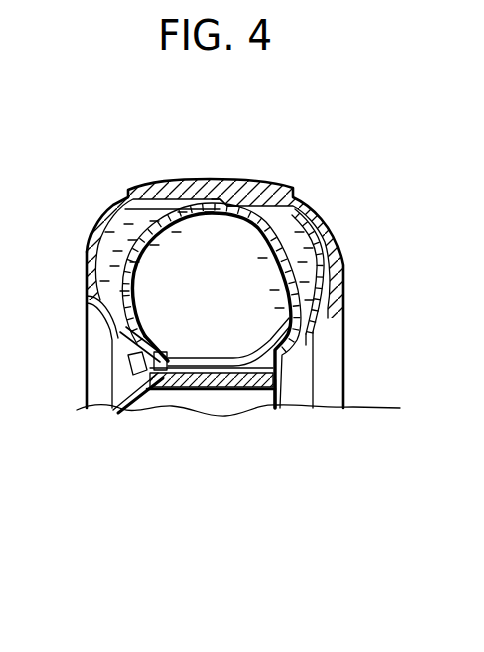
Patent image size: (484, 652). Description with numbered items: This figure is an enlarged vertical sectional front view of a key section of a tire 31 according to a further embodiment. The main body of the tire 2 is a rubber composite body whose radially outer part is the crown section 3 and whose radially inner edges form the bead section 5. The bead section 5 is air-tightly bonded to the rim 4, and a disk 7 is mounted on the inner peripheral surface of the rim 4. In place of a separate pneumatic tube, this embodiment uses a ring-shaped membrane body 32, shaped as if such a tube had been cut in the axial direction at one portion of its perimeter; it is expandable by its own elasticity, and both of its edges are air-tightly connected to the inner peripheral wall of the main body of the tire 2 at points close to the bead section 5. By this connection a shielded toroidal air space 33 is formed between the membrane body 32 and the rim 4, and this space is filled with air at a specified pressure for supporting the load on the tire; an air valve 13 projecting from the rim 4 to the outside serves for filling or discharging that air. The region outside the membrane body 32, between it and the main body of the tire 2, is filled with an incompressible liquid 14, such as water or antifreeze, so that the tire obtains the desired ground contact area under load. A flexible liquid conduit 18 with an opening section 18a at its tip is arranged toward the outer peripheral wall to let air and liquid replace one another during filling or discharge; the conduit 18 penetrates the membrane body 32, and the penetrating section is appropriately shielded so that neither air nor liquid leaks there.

The main body of the tire 2 is at (110, 217).
The crown section 3 is at (185, 200).
The liquid 14 is at (160, 217).
The opening section 18a is at (227, 206).
The ring-shaped membrane body 32 is at (310, 211).
The toroidal air space 33 is at (255, 268).
The tire 31 is at (86, 260).
The bead section 5 is at (112, 320).
The rim 4 is at (113, 349).
The air valve 13 is at (130, 376).
The disk 7 is at (122, 410).
The liquid conduit 18 is at (232, 358).